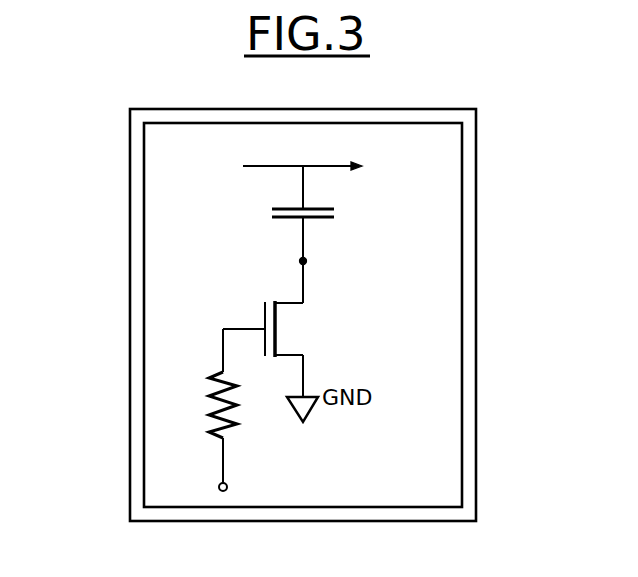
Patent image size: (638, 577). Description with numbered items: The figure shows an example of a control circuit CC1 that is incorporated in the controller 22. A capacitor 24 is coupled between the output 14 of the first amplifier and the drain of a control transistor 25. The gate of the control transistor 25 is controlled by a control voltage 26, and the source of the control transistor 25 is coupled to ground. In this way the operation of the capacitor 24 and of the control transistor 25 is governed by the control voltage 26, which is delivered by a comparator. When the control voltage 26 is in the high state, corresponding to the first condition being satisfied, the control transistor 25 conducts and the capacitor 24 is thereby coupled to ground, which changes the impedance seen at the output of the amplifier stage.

The controller 22 is at (121, 313).
The control circuit CC1 is at (137, 376).
The output 14 is at (302, 173).
The capacitor 24 is at (257, 210).
The control transistor 25 is at (316, 329).
The control voltage 26 is at (233, 415).